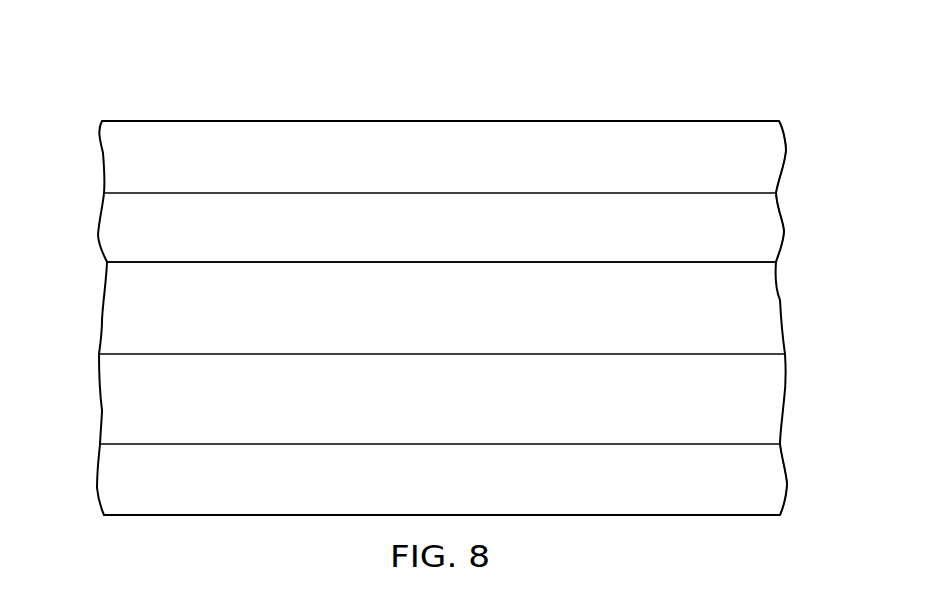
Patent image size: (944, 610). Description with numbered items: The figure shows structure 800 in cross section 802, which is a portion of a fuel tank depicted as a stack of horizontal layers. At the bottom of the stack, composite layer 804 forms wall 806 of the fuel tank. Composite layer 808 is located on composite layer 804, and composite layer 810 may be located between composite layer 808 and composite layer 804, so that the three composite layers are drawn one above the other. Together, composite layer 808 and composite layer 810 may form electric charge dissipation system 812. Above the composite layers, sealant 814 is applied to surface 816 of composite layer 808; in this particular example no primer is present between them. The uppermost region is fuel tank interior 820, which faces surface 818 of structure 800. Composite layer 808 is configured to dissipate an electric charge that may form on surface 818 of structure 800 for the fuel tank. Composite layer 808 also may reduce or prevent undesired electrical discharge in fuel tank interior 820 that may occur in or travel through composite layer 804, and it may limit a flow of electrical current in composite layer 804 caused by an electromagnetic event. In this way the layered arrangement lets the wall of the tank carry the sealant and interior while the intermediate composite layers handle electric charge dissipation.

The structure 800 is at (640, 88).
The cross section 802 is at (797, 490).
The composite layer 804 is at (97, 478).
The wall 806 is at (222, 517).
The composite layer 808 is at (102, 308).
The composite layer 810 is at (100, 400).
The electric charge dissipation system 812 is at (796, 202).
The sealant 814 is at (99, 228).
The surface 816 is at (234, 264).
The surface 818 is at (94, 114).
The fuel tank interior 820 is at (96, 157).